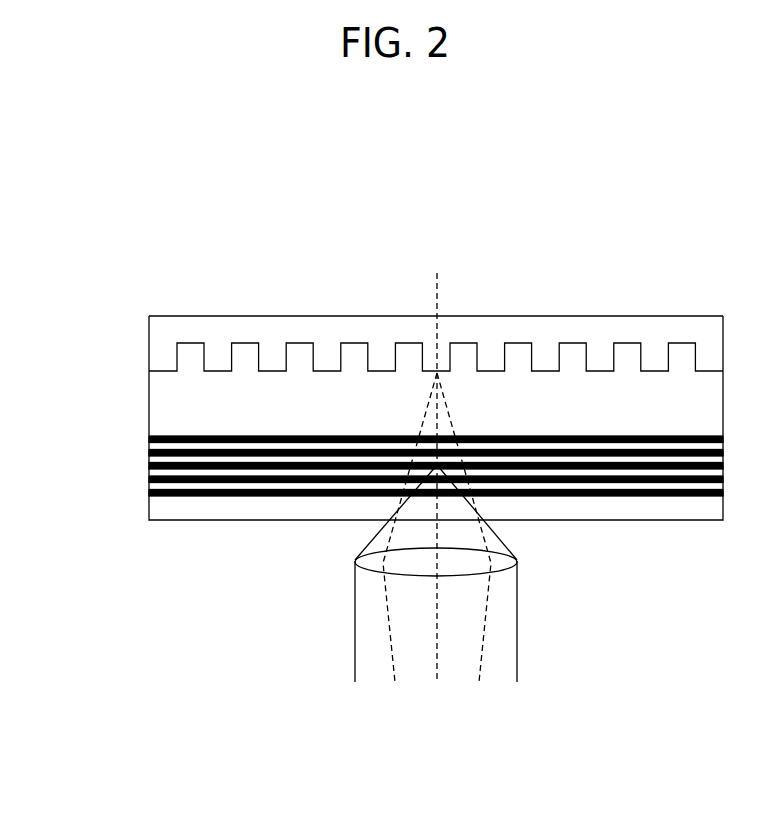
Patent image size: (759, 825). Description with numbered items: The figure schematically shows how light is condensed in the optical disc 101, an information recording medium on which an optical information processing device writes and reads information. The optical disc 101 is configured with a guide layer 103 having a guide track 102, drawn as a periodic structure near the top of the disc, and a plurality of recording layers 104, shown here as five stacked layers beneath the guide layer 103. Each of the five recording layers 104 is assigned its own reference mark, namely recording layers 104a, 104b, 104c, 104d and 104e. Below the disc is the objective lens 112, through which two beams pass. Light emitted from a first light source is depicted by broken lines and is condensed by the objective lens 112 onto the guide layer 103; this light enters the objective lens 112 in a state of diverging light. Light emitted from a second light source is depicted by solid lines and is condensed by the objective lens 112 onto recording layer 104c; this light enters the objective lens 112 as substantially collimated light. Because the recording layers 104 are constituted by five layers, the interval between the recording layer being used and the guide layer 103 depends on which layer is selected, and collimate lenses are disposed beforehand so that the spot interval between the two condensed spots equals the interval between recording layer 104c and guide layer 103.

The optical disc 101 is at (582, 315).
The guide track 102 is at (243, 343).
The guide layer 103 is at (377, 330).
The recording layers 104 is at (376, 386).
The recording layer 104a is at (150, 492).
The recording layer 104b is at (150, 477).
The recording layer 104c is at (150, 465).
The recording layer 104d is at (150, 452).
The recording layer 104e is at (150, 437).
The objective lens 112 is at (502, 557).